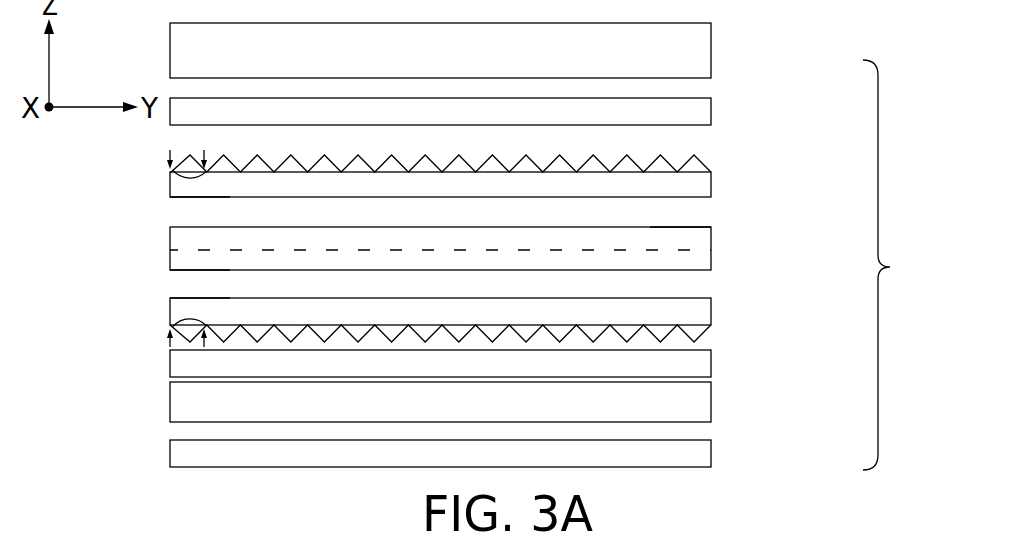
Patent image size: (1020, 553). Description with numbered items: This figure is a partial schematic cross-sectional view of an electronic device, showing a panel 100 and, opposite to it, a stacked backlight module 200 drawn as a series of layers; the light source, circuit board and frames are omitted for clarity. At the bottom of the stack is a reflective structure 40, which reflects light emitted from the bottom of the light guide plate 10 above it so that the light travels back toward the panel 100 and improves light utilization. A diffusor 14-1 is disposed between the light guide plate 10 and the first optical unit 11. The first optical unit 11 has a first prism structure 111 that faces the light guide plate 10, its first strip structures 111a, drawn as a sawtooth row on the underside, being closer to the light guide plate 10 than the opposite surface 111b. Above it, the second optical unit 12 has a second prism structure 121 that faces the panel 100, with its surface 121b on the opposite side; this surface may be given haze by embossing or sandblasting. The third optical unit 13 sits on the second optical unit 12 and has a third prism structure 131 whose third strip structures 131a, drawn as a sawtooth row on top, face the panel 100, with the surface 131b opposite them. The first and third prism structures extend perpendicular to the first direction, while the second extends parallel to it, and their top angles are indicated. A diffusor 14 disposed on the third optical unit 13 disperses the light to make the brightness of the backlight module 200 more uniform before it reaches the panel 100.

The panel 100 is at (711, 50).
The diffusor 14 is at (711, 112).
The third optical unit 13 is at (711, 185).
The third prism structure 131 is at (520, 153).
The third strip structures 131a is at (704, 163).
The surface 131b is at (198, 198).
The second optical unit 12 is at (711, 248).
The second prism structure 121 is at (711, 230).
The surface 121b is at (187, 271).
The first optical unit 11 is at (711, 310).
The top surface of layer 11 111b is at (187, 298).
The first prism structure 111 is at (520, 341).
The first strip structures 111a is at (702, 336).
The diffusor 14-1 is at (711, 362).
The light guide plate 10 is at (711, 402).
The reflective structure 40 is at (711, 452).
The backlight module 200 is at (899, 265).